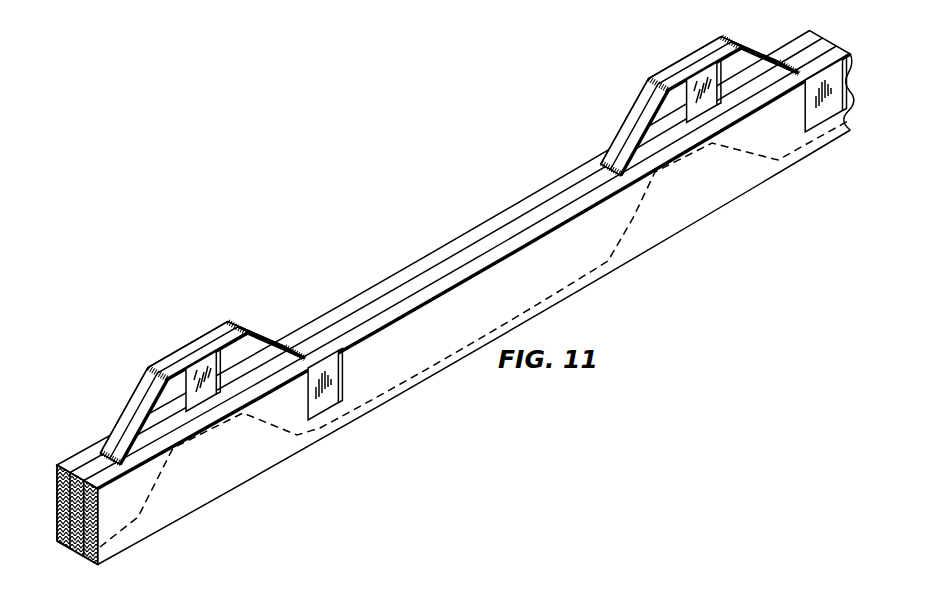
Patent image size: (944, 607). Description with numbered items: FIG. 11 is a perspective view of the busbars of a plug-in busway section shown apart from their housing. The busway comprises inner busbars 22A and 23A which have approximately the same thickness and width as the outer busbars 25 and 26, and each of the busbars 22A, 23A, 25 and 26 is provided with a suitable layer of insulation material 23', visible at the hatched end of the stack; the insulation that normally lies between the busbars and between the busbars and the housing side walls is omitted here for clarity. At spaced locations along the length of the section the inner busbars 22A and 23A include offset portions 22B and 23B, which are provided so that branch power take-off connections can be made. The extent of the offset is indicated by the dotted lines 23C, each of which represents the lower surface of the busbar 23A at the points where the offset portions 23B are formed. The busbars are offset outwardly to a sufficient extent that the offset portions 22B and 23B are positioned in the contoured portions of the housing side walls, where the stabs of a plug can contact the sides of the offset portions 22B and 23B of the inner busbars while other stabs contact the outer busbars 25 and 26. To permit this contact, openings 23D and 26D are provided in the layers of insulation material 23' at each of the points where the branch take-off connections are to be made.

The inner busbar 22A is at (73, 554).
The inner busbar 23A is at (82, 558).
The layer of insulation material 23' is at (101, 492).
The outer busbar 25 is at (58, 540).
The outer busbar 26 is at (97, 566).
The offset portion 22B is at (176, 355).
The offset portion 23B is at (215, 343).
The dotted lines 23C is at (138, 517).
The opening 23D is at (187, 398).
The opening 26D is at (343, 362).